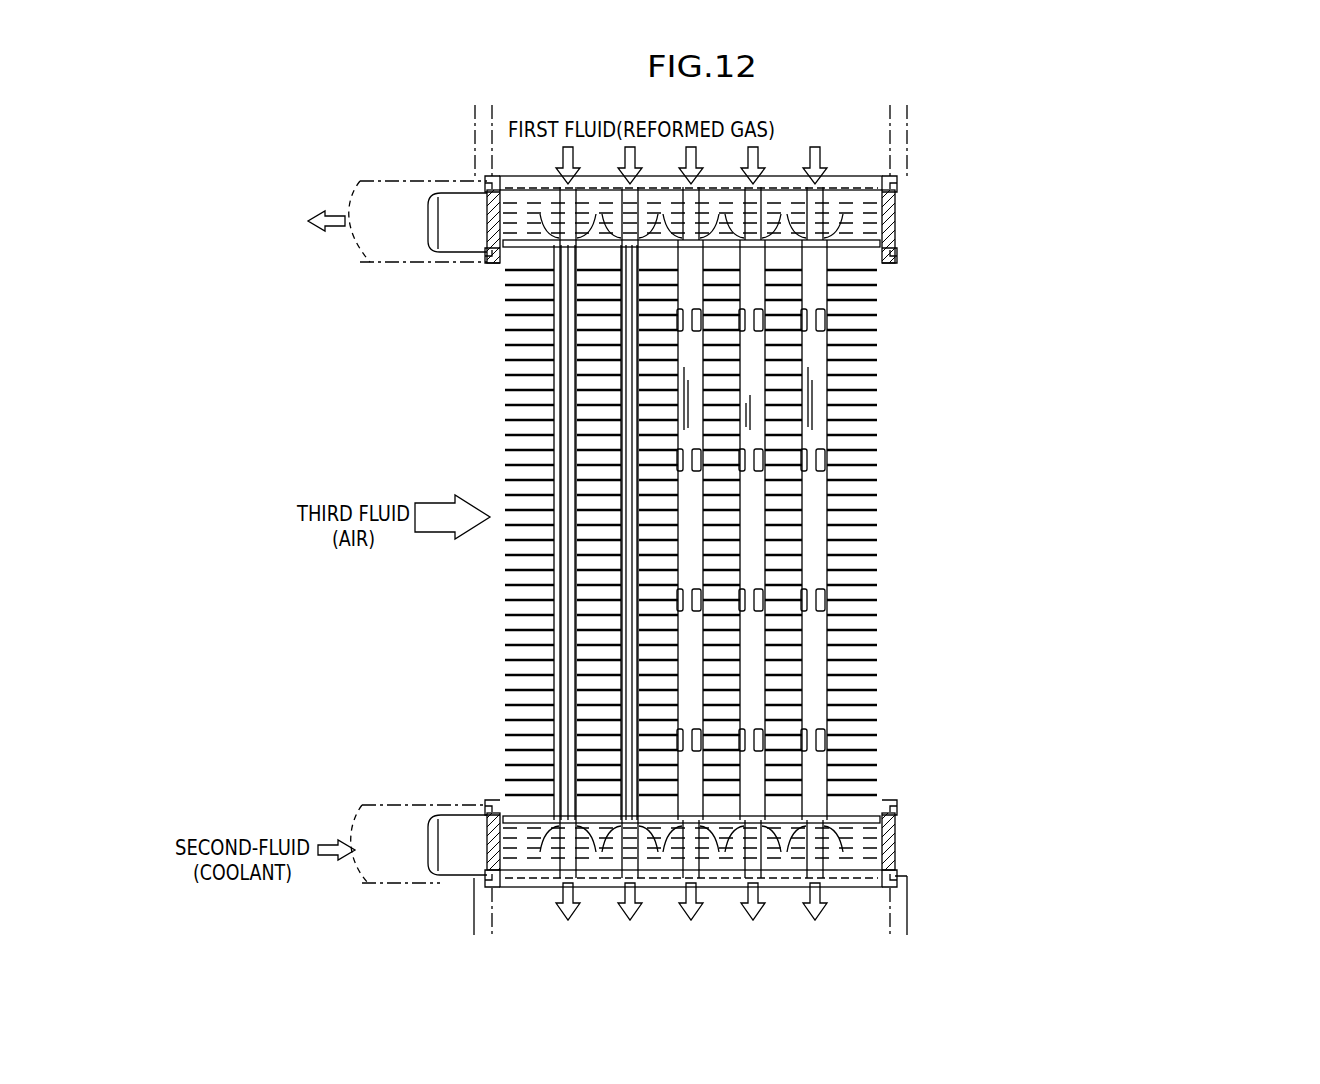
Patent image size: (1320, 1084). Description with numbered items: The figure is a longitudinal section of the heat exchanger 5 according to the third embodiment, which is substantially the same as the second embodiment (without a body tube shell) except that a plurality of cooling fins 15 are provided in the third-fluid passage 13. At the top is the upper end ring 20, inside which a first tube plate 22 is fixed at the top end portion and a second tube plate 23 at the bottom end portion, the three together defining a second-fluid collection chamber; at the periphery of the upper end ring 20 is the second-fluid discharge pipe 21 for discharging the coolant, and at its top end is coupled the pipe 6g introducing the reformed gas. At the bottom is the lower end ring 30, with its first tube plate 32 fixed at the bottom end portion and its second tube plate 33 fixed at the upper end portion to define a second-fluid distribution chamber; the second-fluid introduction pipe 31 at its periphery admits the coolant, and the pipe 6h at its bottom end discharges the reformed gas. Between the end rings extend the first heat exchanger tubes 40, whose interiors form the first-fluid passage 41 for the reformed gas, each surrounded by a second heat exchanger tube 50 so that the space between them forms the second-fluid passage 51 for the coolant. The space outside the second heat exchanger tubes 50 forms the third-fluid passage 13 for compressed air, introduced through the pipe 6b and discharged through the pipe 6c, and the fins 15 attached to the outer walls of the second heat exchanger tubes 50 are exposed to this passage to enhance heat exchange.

The heat exchanger 5 is at (226, 244).
The pipe 6c is at (386, 160).
The pipe 6g is at (897, 122).
The pipe 6b is at (426, 890).
The pipe 6h is at (906, 886).
The second-fluid discharge pipe 21 is at (449, 206).
The second-fluid introduction pipe 31 is at (452, 862).
The upper end ring 20 is at (895, 221).
The first tube plate 22 is at (870, 192).
The second tube plate 23 is at (858, 262).
The lower end ring 30 is at (895, 828).
The second tube plate 33 is at (853, 813).
The first tube plate 32 is at (853, 870).
The first heat exchanger tube 40 is at (820, 197).
The second heat exchanger tube 50 is at (818, 412).
The first-fluid passage 41 is at (567, 336).
The second-fluid passage 51 is at (557, 399).
The third-fluid passage 13 is at (838, 517).
The cooling fin 15 is at (858, 563).